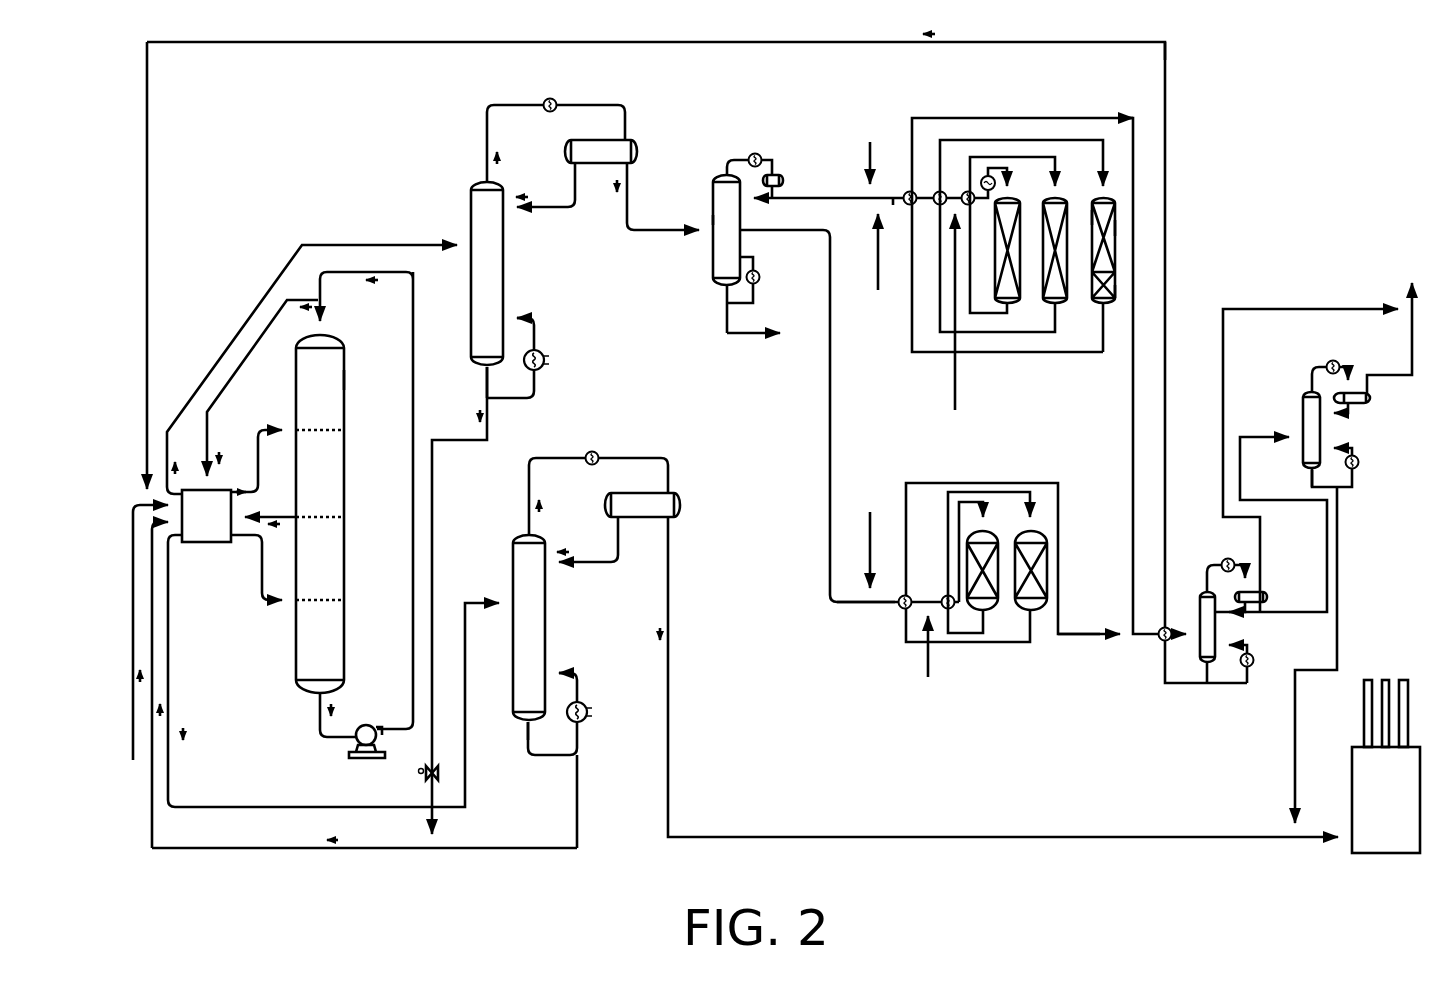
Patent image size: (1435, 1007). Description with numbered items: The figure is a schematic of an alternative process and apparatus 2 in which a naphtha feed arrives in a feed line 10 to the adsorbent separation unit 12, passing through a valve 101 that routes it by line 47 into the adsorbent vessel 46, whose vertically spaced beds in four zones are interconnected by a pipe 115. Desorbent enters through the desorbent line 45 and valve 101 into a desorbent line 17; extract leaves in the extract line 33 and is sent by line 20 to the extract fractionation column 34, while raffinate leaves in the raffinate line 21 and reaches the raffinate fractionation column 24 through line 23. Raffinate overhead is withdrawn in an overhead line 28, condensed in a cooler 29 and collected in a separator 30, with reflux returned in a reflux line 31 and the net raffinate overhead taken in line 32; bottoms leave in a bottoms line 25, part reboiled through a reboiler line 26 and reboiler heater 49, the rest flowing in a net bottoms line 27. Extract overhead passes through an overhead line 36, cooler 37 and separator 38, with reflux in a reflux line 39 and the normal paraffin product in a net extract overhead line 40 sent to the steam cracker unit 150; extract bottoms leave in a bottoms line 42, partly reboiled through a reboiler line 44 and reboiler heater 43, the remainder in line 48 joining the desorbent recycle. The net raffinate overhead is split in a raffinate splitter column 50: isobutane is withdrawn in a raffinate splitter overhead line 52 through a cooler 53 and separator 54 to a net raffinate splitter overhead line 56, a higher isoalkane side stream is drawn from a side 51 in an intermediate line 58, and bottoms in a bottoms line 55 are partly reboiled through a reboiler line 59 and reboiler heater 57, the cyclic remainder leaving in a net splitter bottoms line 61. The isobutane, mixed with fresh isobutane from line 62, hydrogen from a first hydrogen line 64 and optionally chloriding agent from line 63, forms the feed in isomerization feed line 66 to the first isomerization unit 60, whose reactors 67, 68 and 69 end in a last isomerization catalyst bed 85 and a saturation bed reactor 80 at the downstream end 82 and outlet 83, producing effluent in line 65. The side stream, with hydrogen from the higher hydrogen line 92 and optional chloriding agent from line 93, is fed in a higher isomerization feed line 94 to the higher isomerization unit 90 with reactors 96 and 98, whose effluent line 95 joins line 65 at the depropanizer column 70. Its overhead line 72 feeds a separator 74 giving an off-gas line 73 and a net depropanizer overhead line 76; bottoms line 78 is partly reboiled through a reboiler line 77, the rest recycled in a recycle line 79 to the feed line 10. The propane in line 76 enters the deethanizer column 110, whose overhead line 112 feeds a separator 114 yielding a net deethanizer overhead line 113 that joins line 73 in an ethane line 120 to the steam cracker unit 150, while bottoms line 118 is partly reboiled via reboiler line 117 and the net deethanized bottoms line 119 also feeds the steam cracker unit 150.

The process and apparatus 2 is at (1220, 91).
The feed line 10 is at (133, 522).
The adsorbent separation unit 12 is at (247, 160).
The desorbent line 17 is at (258, 445).
The extract line 20 is at (168, 670).
The raffinate line 21 is at (236, 376).
The line 23 is at (254, 312).
The raffinate fractionation column 24 is at (471, 290).
The bottoms line 25 is at (485, 378).
The reboiler line 26 is at (525, 317).
The net bottoms line 27 is at (433, 537).
The overhead line 28 is at (487, 148).
The cooler 29 is at (548, 100).
The separator 30 is at (565, 152).
The reflux line 31 is at (532, 210).
The net raffinate overhead line 32 is at (625, 222).
The extract line 33 is at (283, 517).
The extract fractionation column 34 is at (513, 645).
The overhead line 36 is at (529, 502).
The cooler 37 is at (588, 452).
The separator 38 is at (605, 505).
The reflux line 39 is at (575, 562).
The net extract overhead line 40 is at (668, 605).
The bottoms line 42 is at (528, 727).
The reboiler heater 43 is at (585, 700).
The reboiler line 44 is at (570, 672).
The desorbent line 45 is at (232, 848).
The adsorbent vessel 46 is at (345, 378).
The line 47 is at (265, 606).
The line 48 is at (577, 818).
The reboiler heater 49 is at (542, 350).
The raffinate splitter column 50 is at (713, 258).
The side 51 is at (712, 216).
The raffinate splitter overhead line 52 is at (730, 158).
The cooler 53 is at (758, 155).
The separator 54 is at (787, 178).
The bottoms line 55 is at (727, 300).
The net raffinate splitter overhead line 56 is at (842, 197).
The reboiler heater 57 is at (760, 283).
The intermediate line 58 is at (830, 388).
The reboiler line 59 is at (760, 272).
The first isomerization unit 60 is at (1193, 185).
The net splitter bottoms line 61 is at (727, 333).
The fresh isobutane line 62 is at (870, 145).
The line 63 is at (953, 372).
The first hydrogen line 64 is at (878, 274).
The isomerization effluent line 65 is at (1003, 118).
The isomerization feed line 66 is at (895, 197).
The first isomerization reactor 67 is at (996, 292).
The second isomerization reactor 68 is at (1043, 270).
The last isomerization reactor 69 is at (1093, 212).
The depropanizer column 70 is at (1201, 592).
The depropanizer overhead line 72 is at (1245, 570).
The depropanizer off-gas line 73 is at (1260, 532).
The separator 74 is at (1268, 598).
The net depropanizer overhead line 76 is at (1268, 437).
The reboiler line 77 is at (1240, 686).
The bottoms line 78 is at (1206, 674).
The recycle line 79 is at (876, 43).
The bed reactor 80 is at (1118, 290).
The downstream end 82 is at (1111, 308).
The outlet 83 is at (1100, 300).
The last isomerization catalyst bed 85 is at (1120, 228).
The higher isomerization unit 90 is at (1066, 542).
The higher hydrogen line 92 is at (876, 530).
The line 93 is at (928, 677).
The higher isomerization feed line 94 is at (888, 606).
The higher isomerization effluent line 95 is at (1082, 634).
The first higher isomerization reactor 96 is at (973, 612).
The second higher isomerization reactor 98 is at (1027, 612).
The valve 101 is at (208, 543).
The deethanizer column 110 is at (1304, 397).
The deethanizer overhead line 112 is at (1343, 364).
The net deethanizer overhead line 113 is at (318, 728).
The separator 114 is at (378, 757).
The pipe 115 is at (410, 532).
The reboiler line 117 is at (1340, 488).
The bottoms line 118 is at (1310, 478).
The net deethanized bottoms line 119 is at (1336, 636).
The ethane line 120 is at (1410, 300).
The steam cracker unit 150 is at (1368, 853).